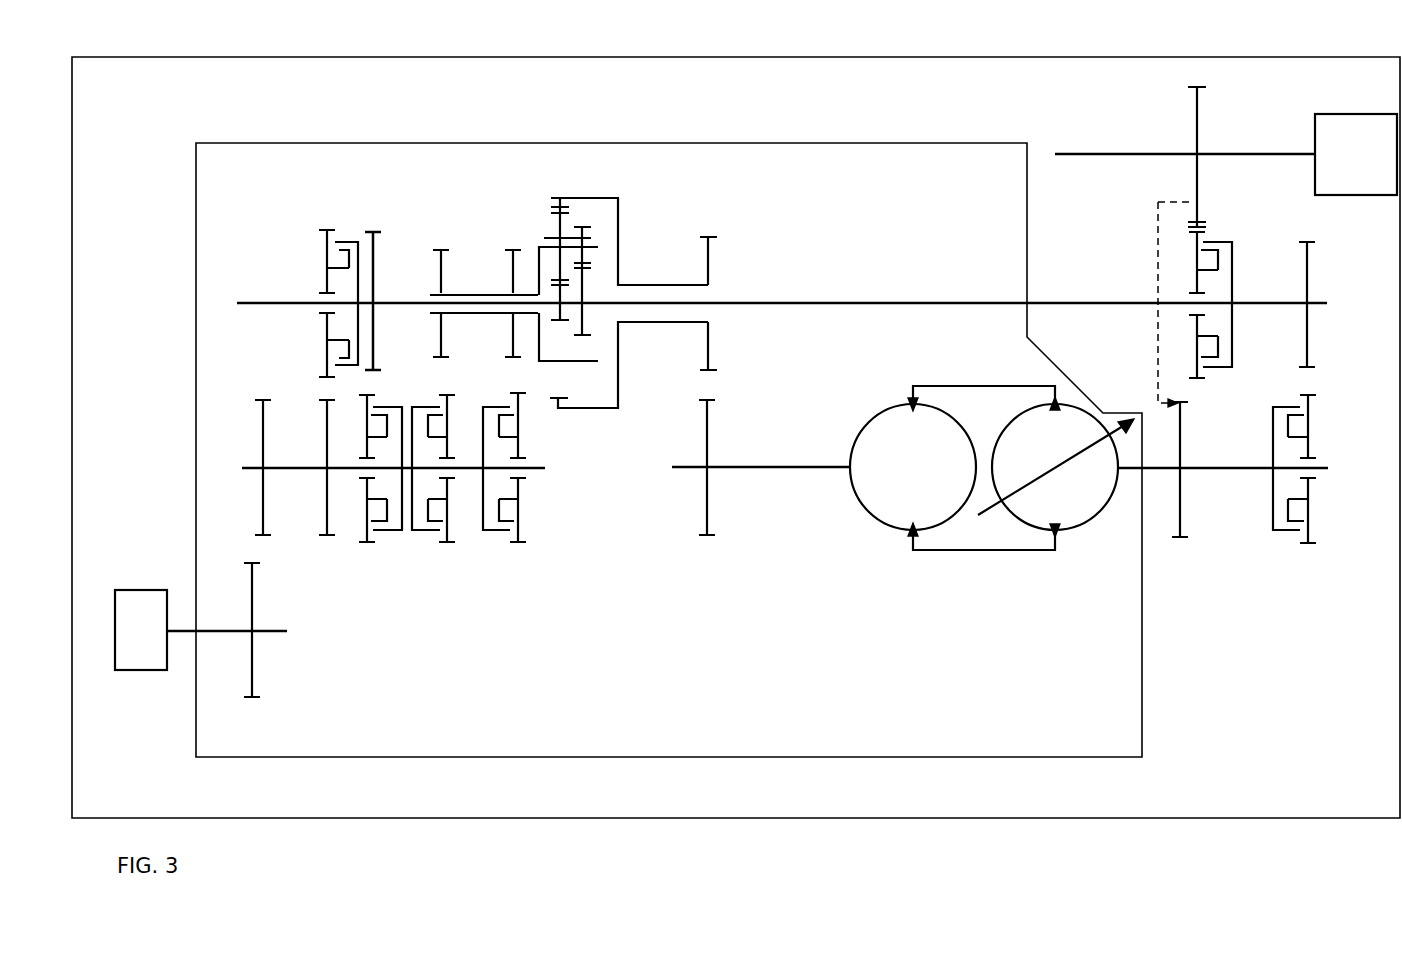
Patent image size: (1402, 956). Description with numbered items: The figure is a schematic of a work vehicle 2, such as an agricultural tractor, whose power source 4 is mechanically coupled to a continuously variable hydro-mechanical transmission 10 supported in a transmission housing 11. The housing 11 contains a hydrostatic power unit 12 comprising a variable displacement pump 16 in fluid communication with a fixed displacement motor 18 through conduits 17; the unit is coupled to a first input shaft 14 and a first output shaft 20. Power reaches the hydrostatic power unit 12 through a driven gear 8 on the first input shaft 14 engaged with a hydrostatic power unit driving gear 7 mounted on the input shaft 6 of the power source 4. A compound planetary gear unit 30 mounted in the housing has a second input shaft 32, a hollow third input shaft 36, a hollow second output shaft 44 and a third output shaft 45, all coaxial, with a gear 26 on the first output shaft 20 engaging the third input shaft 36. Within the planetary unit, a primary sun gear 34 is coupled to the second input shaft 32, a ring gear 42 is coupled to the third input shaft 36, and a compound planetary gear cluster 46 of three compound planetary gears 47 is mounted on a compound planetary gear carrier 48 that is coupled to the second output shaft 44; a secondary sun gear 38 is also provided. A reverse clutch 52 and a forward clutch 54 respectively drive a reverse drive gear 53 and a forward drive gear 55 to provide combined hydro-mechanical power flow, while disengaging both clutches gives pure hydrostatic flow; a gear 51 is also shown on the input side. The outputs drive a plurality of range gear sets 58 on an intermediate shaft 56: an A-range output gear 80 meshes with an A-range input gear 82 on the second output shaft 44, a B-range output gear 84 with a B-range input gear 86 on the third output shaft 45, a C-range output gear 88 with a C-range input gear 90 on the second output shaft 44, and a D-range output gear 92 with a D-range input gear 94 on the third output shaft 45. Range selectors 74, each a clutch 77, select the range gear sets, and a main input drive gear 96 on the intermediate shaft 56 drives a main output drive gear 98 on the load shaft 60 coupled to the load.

The work vehicle 2 is at (903, 820).
The power source 4 is at (1352, 197).
The input shaft 6 is at (1248, 153).
The hydrostatic power unit driving gear 7 is at (1198, 122).
The driven gear 8 is at (1184, 518).
The continuously variable hydro-mechanical transmission 10 is at (721, 478).
The transmission housing 11 is at (903, 758).
The hydrostatic power unit 12 is at (985, 482).
The first input shaft 14 is at (1130, 476).
The pump 16 is at (1093, 528).
The conduits 17 is at (983, 385).
The motor 18 is at (857, 505).
The first output shaft 20 is at (762, 470).
The gear 26 is at (710, 437).
The compound planetary gear unit 30 is at (595, 326).
The second input shaft 32 is at (818, 300).
The primary sun gear 34 is at (651, 346).
The third input shaft 36 is at (667, 284).
The secondary sun gear 38 is at (552, 314).
The ring gear 42 is at (592, 198).
The second output shaft 44 is at (455, 293).
The third output shaft 45 is at (398, 300).
The compound planetary gear cluster 46 is at (528, 223).
The compound planetary gears 47 is at (555, 232).
The compound planetary gear carrier 48 is at (538, 276).
The gear 51 is at (1307, 333).
The reverse clutch 52 is at (1233, 257).
The reverse drive gear 53 is at (1197, 360).
The forward clutch 54 is at (1306, 494).
The forward drive gear 55 is at (1307, 527).
The intermediate shaft 56 is at (545, 470).
The range gear sets 58 is at (389, 425).
The load shaft 60 is at (273, 633).
The range selectors 74 is at (355, 230).
The clutch 77 is at (347, 240).
The A-range output gear 80 is at (522, 536).
The A-range input gear 82 is at (512, 341).
The B-range output gear 84 is at (367, 522).
The B-range input gear 86 is at (372, 348).
The C-range output gear 88 is at (448, 495).
The C-range input gear 90 is at (440, 336).
The D-range output gear 92 is at (325, 500).
The D-range input gear 94 is at (325, 348).
The main input drive gear 96 is at (258, 436).
The main output drive gear 98 is at (252, 680).